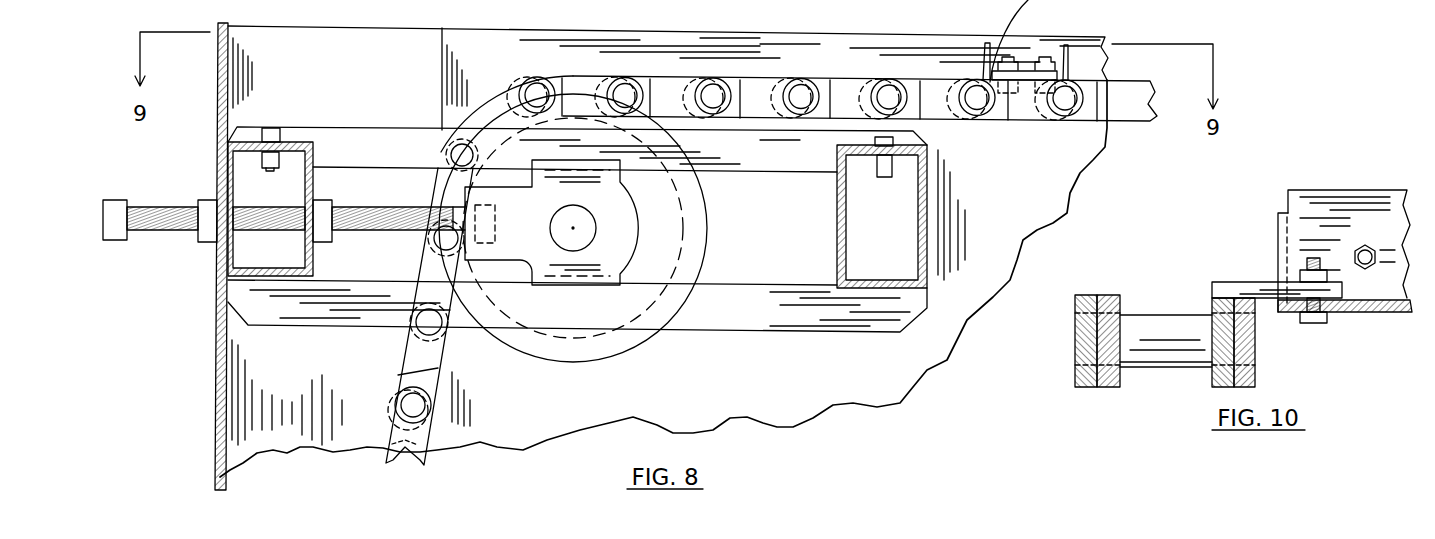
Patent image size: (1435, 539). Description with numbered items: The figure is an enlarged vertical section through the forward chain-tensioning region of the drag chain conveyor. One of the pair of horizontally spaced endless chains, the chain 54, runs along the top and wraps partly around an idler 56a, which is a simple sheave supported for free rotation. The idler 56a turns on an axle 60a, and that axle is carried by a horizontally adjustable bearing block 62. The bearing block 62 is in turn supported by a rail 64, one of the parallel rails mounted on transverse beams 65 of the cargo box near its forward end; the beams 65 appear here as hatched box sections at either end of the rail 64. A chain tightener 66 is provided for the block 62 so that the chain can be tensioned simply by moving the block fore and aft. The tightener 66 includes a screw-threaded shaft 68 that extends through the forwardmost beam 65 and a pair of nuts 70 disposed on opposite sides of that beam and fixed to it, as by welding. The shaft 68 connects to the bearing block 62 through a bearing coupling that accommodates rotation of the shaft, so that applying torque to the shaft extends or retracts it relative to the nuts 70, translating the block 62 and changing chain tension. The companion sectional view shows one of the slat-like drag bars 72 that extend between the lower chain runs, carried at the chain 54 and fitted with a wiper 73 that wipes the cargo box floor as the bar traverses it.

In FIG. 8, the endless chain 54 is at (845, 80).
In FIG. 10, the endless chain 54 is at (1255, 348).
In FIG. 8, the idler 56a is at (605, 360).
In FIG. 8, the axle 60a is at (581, 220).
In FIG. 8, the bearing block 62 is at (642, 228).
In FIG. 8, the rail 64 is at (788, 169).
In FIG. 8, the transverse beam 65 is at (292, 147).
In FIG. 8, the chain tightener 66 is at (180, 234).
In FIG. 8, the screw-threaded shaft 68 is at (396, 231).
In FIG. 8, the nut 70 is at (206, 198).
In FIG. 10, the drag bar 72 is at (1294, 227).
In FIG. 10, the wiper 73 is at (1298, 222).